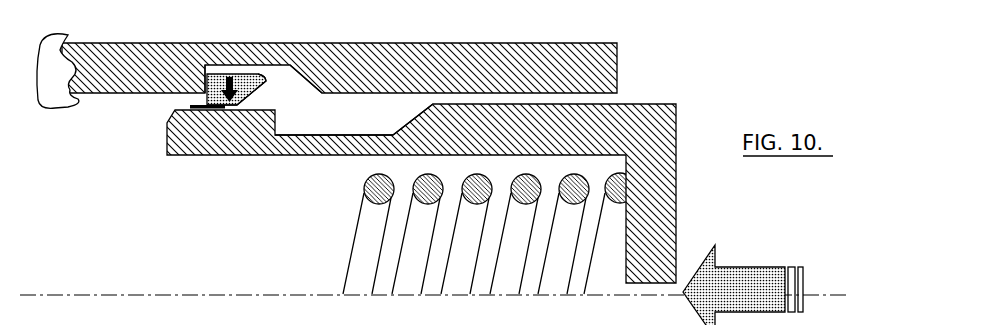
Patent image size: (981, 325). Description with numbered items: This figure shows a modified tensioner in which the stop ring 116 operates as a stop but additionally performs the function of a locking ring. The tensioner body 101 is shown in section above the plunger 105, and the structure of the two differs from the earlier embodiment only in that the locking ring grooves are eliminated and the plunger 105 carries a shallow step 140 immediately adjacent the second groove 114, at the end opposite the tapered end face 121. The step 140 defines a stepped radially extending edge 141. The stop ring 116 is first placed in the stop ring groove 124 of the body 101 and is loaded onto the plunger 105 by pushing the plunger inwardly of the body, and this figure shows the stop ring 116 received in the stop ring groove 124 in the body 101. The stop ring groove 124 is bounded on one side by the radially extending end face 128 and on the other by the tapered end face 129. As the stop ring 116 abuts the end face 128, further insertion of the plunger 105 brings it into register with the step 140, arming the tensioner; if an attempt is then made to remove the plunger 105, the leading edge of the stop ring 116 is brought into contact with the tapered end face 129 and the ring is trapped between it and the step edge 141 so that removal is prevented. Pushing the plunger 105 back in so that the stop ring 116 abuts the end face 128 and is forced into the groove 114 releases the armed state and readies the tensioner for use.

The tensioner body 101 is at (610, 62).
The plunger 105 is at (663, 117).
The second groove 114 is at (338, 135).
The stop ring 116 is at (253, 86).
The tapered end face 121 is at (407, 125).
The stop ring groove 124 is at (248, 72).
The end face of the stop ring groove 128 is at (205, 68).
The tapered end face of the stop ring groove 129 is at (298, 75).
The step 140 is at (260, 108).
The step edge 141 is at (195, 106).